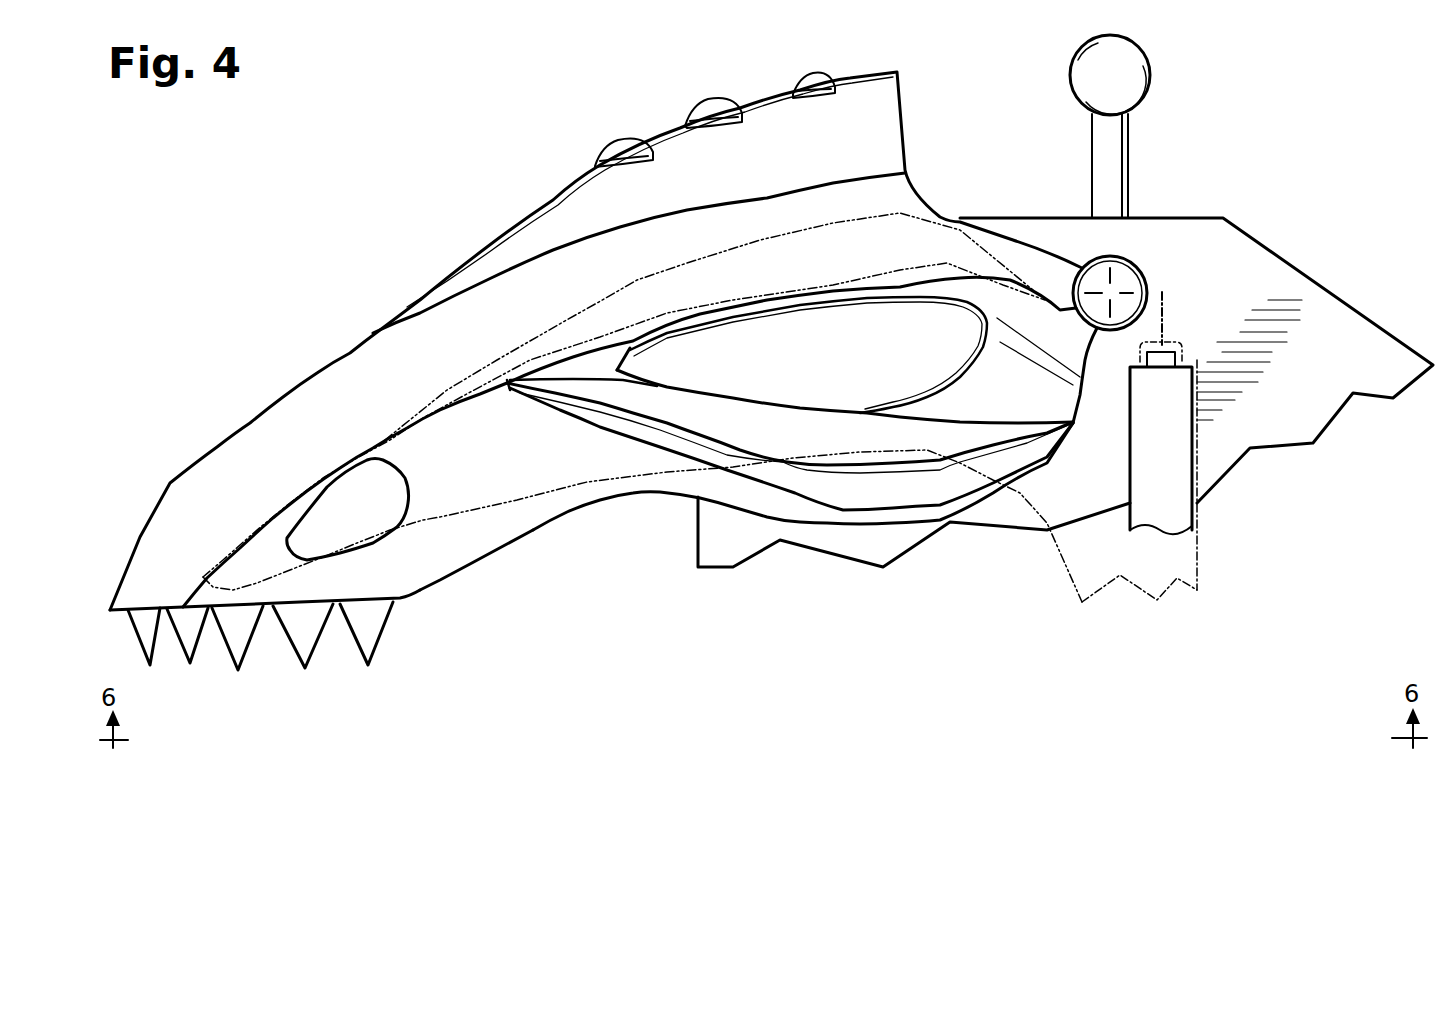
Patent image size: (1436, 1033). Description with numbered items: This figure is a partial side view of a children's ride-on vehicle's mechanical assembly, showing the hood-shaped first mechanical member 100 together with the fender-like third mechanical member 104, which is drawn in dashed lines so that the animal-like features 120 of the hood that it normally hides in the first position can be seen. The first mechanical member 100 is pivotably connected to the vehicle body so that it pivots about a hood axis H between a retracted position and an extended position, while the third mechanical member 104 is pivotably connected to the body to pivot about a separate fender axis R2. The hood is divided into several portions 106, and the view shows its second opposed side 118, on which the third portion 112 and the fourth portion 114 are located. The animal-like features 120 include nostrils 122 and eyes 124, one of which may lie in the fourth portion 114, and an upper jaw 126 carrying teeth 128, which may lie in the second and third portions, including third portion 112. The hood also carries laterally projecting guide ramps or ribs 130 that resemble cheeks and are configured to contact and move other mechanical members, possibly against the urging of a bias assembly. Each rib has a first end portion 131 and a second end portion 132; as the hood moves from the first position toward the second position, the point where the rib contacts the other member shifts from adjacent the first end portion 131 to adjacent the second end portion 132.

The first mechanical member 100 is at (247, 445).
The third mechanical member 104 is at (515, 483).
The portions 106 is at (475, 467).
The third portion 112 is at (276, 660).
The fourth portion 114 is at (447, 493).
The second opposed side 118 is at (587, 468).
The animal-like features 120 is at (370, 645).
The nostrils 122 is at (347, 492).
The eyes 124 is at (872, 322).
The upper jaw 126 is at (420, 587).
The teeth 128 is at (227, 645).
The ribs 130 is at (900, 490).
The first end portion 131 is at (764, 447).
The second end portion 132 is at (1033, 440).
The hood axis H is at (1112, 290).
The fender axis R2 is at (1165, 295).